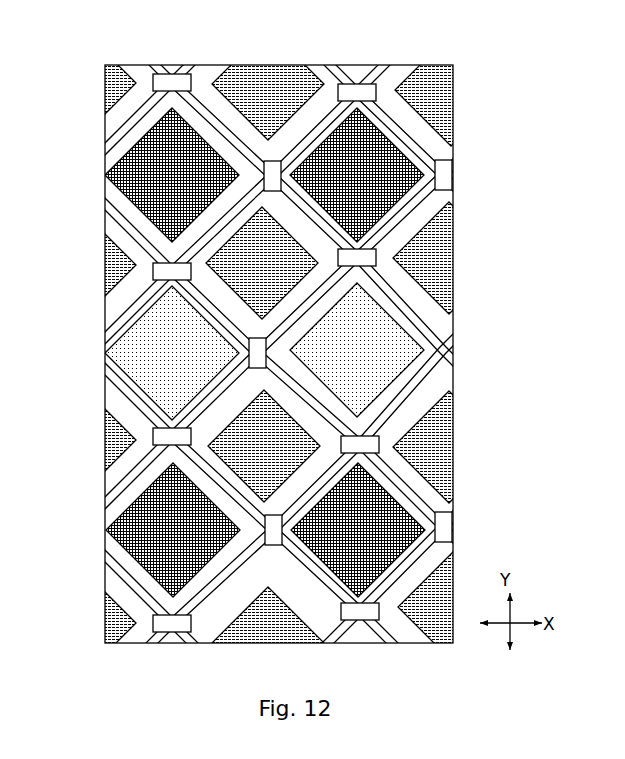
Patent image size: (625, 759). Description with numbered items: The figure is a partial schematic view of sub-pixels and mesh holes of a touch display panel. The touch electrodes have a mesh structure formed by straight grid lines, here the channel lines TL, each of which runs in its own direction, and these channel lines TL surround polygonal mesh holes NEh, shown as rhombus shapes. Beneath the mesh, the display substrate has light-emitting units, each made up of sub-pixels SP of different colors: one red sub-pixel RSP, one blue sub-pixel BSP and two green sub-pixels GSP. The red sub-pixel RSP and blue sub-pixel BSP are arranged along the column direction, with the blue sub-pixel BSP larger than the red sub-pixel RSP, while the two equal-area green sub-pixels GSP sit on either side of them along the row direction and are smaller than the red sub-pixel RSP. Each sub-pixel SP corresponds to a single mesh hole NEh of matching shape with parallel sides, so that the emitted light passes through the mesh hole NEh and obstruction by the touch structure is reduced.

The blue sub-pixel BSP is at (363, 147).
The mesh hole NEh is at (397, 137).
The green sub-pixel GSP is at (253, 258).
The channel line TL is at (433, 322).
The red sub-pixel RSP is at (392, 366).
The sub-pixel SP is at (528, 522).